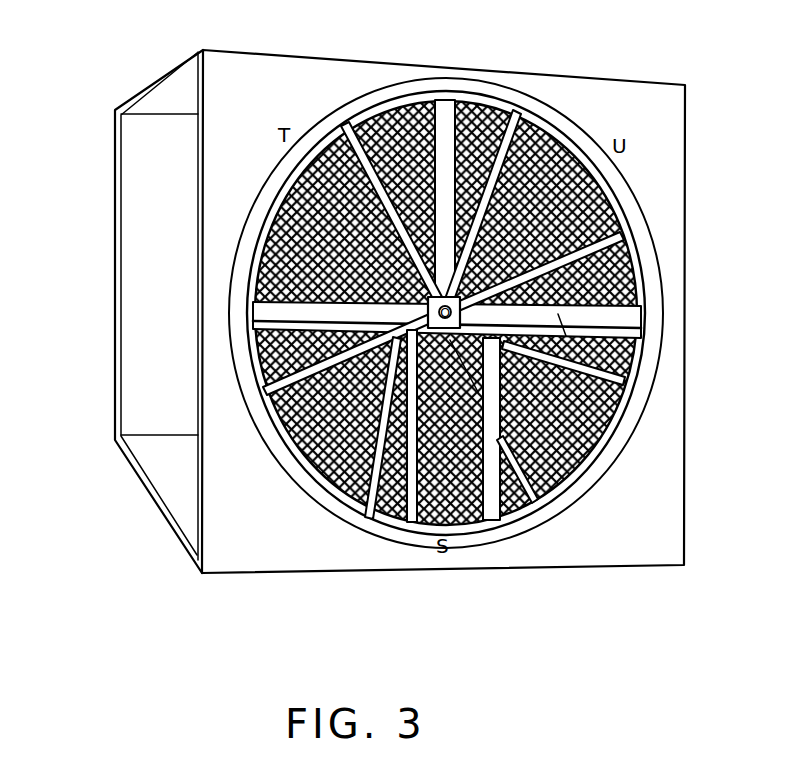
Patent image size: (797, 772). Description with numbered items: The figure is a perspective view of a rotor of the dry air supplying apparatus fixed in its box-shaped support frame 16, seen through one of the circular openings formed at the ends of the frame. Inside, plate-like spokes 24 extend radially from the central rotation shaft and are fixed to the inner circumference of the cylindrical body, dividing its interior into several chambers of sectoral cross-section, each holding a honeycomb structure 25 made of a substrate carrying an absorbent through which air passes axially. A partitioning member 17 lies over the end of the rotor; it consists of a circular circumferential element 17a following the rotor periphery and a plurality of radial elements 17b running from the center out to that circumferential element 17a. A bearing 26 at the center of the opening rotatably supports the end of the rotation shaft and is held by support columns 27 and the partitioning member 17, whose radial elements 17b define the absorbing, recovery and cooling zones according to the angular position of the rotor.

The support frame 16 is at (663, 113).
The partitioning member 17 is at (389, 348).
The circumferential element 17a is at (590, 457).
The radial element 17b is at (389, 348).
The spoke 24 is at (382, 112).
The honeycomb structure 25 is at (577, 160).
The bearing 26 is at (607, 237).
The support column 27 is at (492, 490).